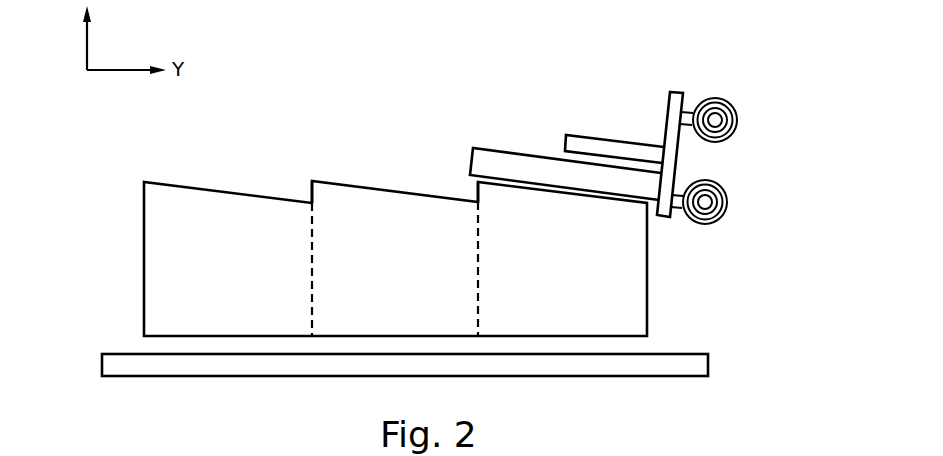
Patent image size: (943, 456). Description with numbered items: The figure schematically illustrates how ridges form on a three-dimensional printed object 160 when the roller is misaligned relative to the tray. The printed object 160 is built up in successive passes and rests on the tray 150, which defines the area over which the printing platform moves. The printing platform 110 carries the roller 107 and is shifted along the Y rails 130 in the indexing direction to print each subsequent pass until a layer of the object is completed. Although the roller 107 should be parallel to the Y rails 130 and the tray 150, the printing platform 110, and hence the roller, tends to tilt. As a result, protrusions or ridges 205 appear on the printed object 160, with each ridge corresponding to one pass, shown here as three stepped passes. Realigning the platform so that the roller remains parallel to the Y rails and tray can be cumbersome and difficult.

The printed object 160 is at (173, 197).
The ridges 205 is at (310, 192).
The roller 107 is at (520, 158).
The printing platform 110 is at (632, 135).
The Y rails 130 is at (723, 182).
The tray 150 is at (120, 363).